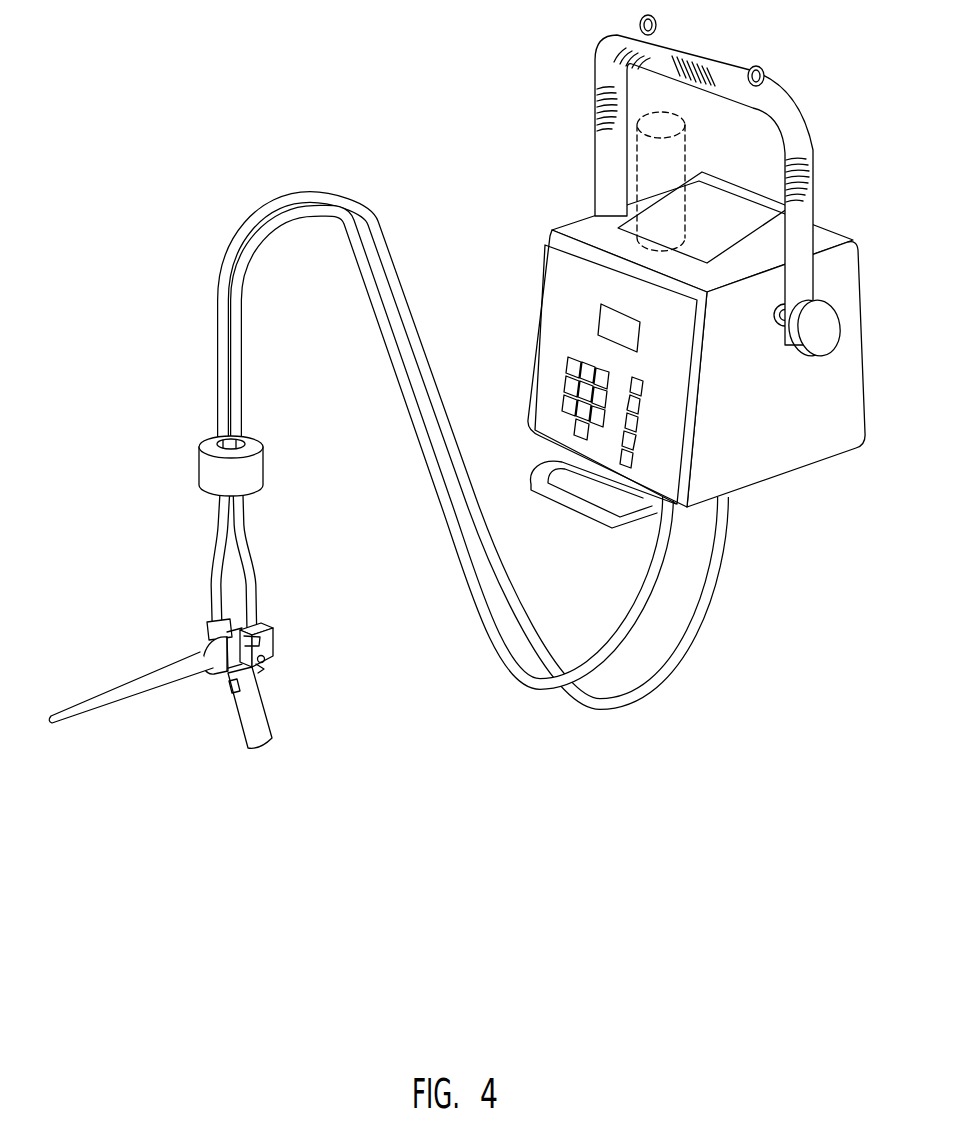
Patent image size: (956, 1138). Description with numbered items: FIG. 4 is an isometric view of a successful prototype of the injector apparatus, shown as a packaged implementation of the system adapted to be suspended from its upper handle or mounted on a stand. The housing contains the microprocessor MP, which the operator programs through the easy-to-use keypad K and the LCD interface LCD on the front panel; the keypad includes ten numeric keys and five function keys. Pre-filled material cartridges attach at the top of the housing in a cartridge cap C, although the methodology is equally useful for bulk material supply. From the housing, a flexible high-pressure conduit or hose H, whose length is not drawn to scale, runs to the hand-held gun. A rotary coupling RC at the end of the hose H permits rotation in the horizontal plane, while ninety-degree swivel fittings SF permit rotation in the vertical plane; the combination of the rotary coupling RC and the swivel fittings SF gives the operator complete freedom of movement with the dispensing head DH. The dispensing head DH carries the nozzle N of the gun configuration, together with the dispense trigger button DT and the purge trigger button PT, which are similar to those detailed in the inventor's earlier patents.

The cartridge cap C is at (670, 122).
The LCD interface LCD is at (610, 320).
The keypad K is at (584, 388).
The microprocessor MP is at (790, 452).
The rotary coupling RC is at (263, 453).
The flexible high-pressure conduit or hose H is at (472, 581).
The dispensing head DH is at (203, 648).
The nozzle N is at (113, 690).
The swivel fittings SF is at (273, 658).
The purge trigger button PT is at (264, 667).
The dispense trigger button DT is at (225, 680).